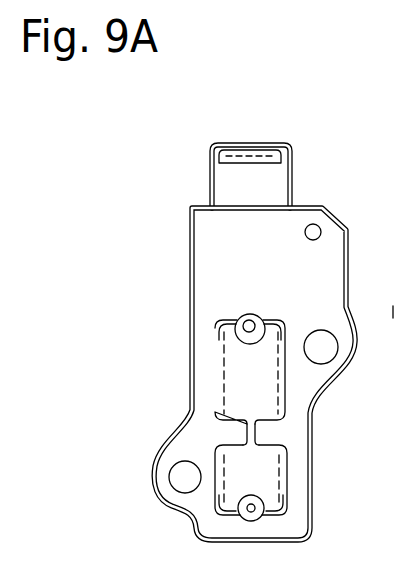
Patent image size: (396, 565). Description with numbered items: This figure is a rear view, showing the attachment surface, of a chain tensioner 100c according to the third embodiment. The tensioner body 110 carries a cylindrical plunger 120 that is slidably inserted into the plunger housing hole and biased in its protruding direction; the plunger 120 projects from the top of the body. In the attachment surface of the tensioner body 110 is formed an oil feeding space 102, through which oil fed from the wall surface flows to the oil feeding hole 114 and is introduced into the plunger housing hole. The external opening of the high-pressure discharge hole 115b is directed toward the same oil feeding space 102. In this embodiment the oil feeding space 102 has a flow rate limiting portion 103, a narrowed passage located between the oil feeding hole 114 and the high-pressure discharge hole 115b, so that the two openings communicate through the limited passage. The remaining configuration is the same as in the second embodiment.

The chain tensioner 100c is at (95, 152).
The plunger 120 is at (210, 182).
The tensioner body 110 is at (190, 283).
The oil feeding hole 114 is at (248, 322).
The oil feeding space 102 is at (243, 388).
The flow rate limiting portion 103 is at (247, 432).
The high-pressure discharge hole 115b is at (254, 508).